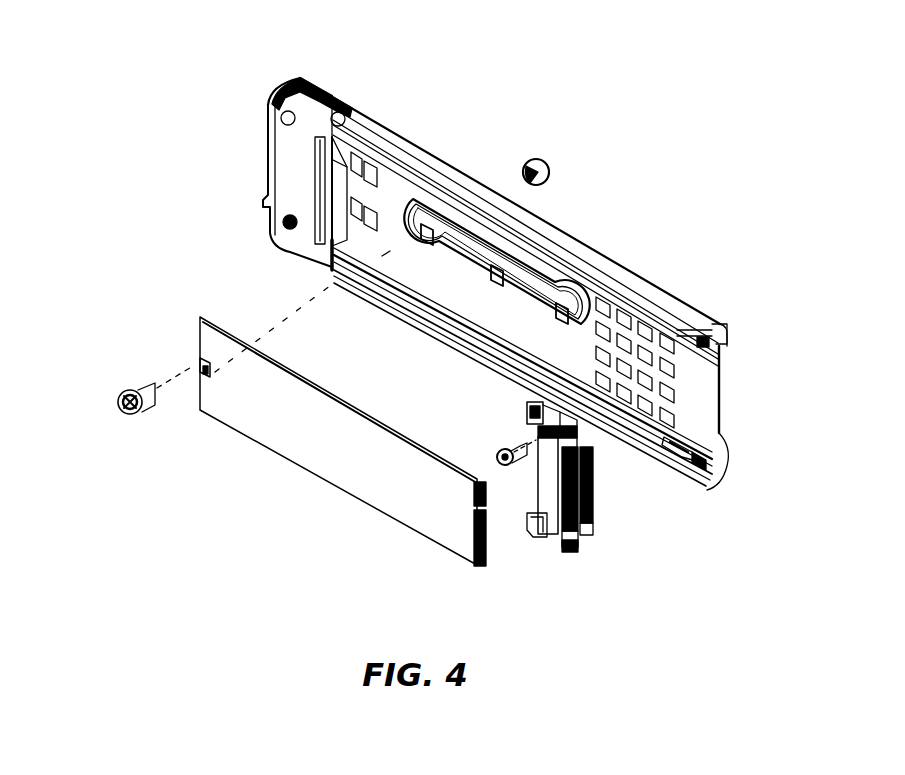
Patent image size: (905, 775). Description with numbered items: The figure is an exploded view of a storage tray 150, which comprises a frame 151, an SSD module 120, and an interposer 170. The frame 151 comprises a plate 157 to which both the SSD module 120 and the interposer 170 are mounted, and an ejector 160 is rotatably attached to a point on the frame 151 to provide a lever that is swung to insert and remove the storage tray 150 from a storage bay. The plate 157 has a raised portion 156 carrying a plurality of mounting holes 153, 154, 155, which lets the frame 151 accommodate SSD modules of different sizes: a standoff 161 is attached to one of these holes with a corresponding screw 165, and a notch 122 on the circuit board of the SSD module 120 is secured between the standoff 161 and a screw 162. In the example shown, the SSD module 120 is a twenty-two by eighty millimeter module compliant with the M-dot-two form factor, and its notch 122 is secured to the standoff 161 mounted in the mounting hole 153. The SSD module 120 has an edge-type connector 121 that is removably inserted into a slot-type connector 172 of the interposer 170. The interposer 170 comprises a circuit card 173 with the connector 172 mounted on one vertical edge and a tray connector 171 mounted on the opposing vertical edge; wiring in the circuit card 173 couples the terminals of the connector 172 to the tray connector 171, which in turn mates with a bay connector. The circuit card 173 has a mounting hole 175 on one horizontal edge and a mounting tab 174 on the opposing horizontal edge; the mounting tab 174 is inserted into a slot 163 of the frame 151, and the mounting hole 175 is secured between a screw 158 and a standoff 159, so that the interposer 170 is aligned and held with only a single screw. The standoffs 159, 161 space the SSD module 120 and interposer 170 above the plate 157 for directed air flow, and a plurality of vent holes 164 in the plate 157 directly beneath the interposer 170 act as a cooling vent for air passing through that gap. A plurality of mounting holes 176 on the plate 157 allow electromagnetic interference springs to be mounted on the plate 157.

The SSD module 120 is at (263, 422).
The edge-type connector 121 is at (489, 553).
The notch 122 is at (197, 364).
The storage tray 150 is at (157, 93).
The frame 151 is at (677, 306).
The mounting hole 153 is at (427, 224).
The mounting hole 154 is at (498, 270).
The mounting hole 155 is at (560, 308).
The raised portion 156 is at (449, 218).
The plate 157 is at (438, 288).
The screw 158 is at (497, 462).
The standoff 159 is at (724, 344).
The ejector 160 is at (267, 126).
The standoff 161 is at (138, 388).
The screw 162 is at (117, 412).
The slot 163 is at (678, 438).
The vent holes 164 is at (601, 303).
The screw 165 is at (548, 168).
The interposer 170 is at (640, 539).
The tray connector 171 is at (596, 488).
The slot-type connector 172 is at (548, 523).
The circuit card 173 is at (567, 553).
The mounting tab 174 is at (530, 531).
The mounting hole 175 is at (547, 432).
The mounting holes 176 is at (371, 177).